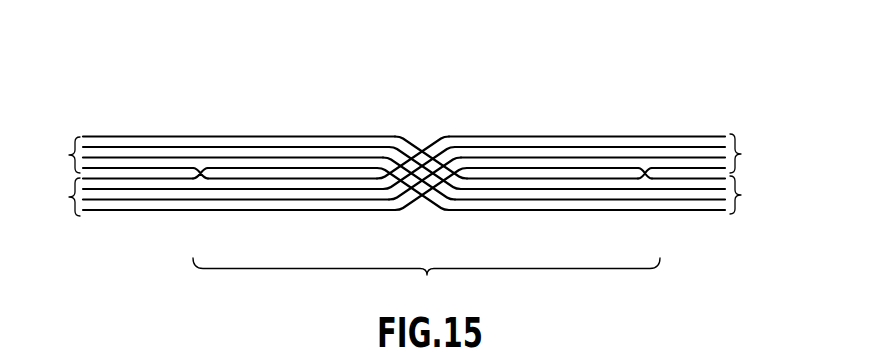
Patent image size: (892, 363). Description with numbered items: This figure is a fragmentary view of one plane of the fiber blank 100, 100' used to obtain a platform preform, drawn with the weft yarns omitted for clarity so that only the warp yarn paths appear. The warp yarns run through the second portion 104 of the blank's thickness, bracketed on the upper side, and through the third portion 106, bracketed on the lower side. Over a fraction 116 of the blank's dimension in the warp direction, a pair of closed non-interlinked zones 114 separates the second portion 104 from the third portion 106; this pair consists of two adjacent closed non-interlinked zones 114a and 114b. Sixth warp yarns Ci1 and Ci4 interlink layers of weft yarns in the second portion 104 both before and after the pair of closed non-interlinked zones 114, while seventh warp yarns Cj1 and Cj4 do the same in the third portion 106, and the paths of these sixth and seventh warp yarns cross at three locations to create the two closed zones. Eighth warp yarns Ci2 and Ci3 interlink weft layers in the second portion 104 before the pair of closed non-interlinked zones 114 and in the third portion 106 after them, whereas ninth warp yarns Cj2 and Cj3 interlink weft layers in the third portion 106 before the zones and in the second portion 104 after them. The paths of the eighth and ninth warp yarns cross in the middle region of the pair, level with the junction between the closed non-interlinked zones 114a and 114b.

The fiber blank 100 is at (540, 96).
The fiber blank 100' is at (540, 96).
The second portion 104 is at (404, 153).
The third portion 106 is at (404, 196).
The pair of closed non-interlinked zones 114 is at (426, 134).
The closed non-interlinked zone 114a is at (287, 172).
The closed non-interlinked zone 114b is at (525, 172).
The fraction 116 is at (426, 278).
The sixth warp yarn Ci1 is at (190, 136).
The eighth warp yarn Ci2 is at (158, 147).
The eighth warp yarn Ci3 is at (124, 158).
The sixth warp yarn Ci4 is at (93, 168).
The seventh warp yarn Cj1 is at (192, 210).
The ninth warp yarn Cj2 is at (161, 200).
The ninth warp yarn Cj3 is at (127, 189).
The seventh warp yarn Cj4 is at (95, 178).